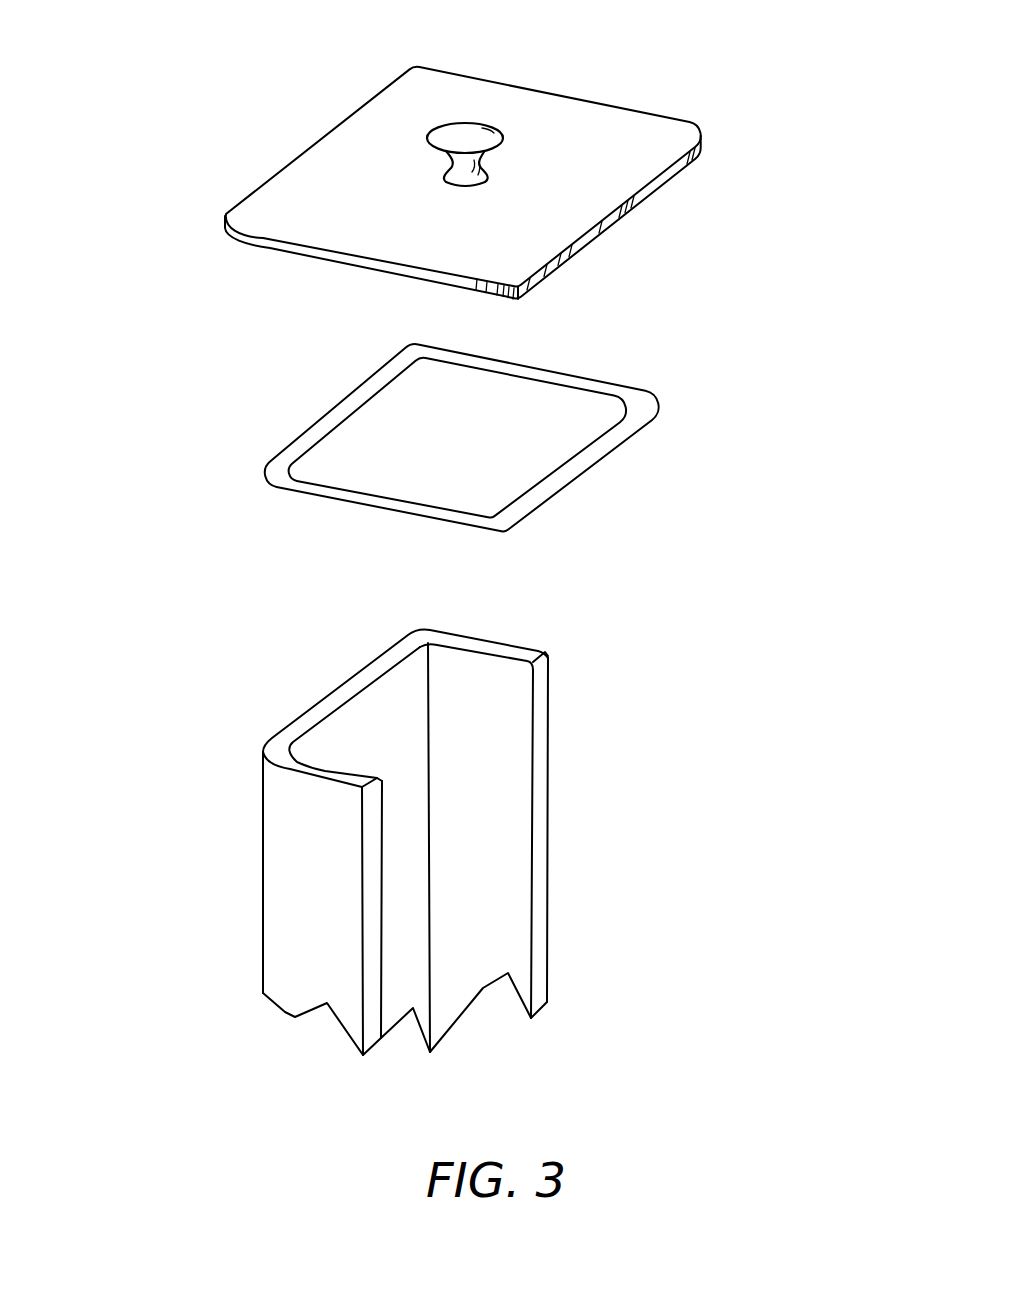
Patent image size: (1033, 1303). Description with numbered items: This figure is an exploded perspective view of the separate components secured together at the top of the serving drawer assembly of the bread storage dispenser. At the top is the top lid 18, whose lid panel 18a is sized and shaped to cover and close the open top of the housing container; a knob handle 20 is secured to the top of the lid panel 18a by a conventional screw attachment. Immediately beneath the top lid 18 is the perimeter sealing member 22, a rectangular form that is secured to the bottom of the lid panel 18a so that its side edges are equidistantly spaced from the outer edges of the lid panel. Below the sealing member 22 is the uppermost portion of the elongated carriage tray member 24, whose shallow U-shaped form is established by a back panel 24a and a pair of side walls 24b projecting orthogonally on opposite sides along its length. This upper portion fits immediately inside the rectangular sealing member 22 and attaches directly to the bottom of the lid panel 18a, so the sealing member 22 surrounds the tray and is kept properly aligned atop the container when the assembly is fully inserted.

The top lid 18 is at (618, 115).
The lid panel 18a is at (655, 192).
The knob handle 20 is at (482, 128).
The sealing member 22 is at (565, 377).
The carriage tray member 24 is at (388, 836).
The back panel 24a is at (363, 665).
The side walls 24b is at (549, 718).